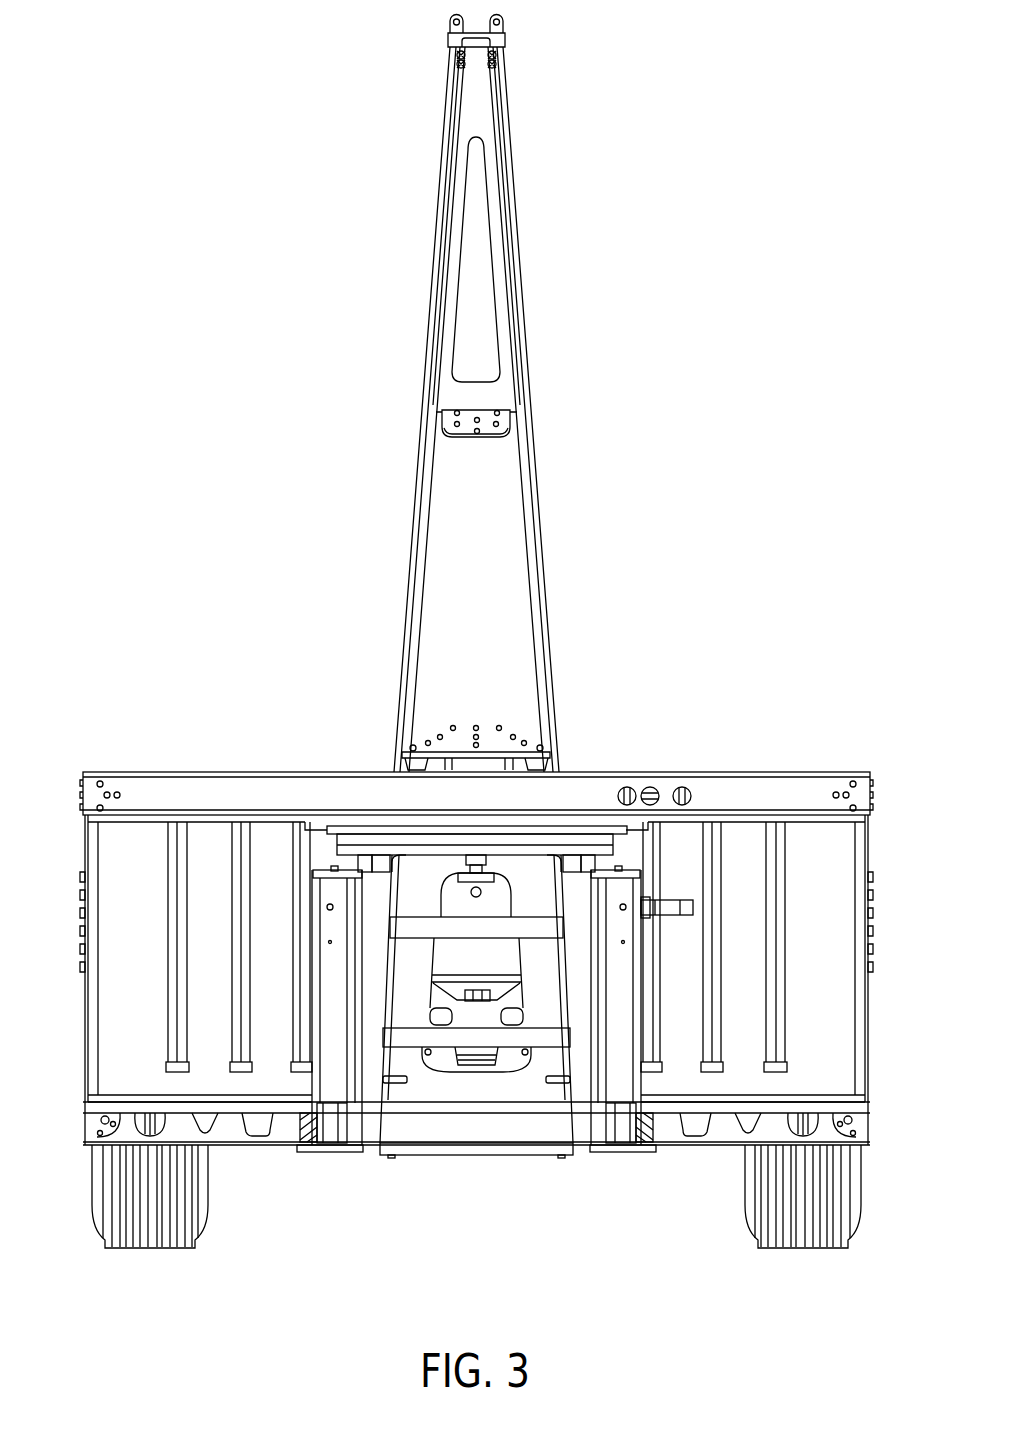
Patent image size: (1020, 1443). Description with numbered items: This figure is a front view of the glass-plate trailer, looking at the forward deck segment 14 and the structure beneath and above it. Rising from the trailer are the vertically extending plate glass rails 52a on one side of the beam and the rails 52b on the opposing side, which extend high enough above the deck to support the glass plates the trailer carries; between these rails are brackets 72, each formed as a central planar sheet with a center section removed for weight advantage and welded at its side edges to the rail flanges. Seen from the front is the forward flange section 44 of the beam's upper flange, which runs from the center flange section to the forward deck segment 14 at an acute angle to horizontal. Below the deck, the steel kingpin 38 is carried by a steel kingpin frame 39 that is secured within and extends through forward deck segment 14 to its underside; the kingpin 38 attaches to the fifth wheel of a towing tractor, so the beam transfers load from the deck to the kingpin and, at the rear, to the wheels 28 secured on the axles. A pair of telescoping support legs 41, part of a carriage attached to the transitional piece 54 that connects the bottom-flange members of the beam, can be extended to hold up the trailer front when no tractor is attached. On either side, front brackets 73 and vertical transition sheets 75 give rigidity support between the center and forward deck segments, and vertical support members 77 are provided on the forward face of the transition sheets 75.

The forward deck segment 14 is at (800, 770).
The wheels 28 is at (210, 1190).
The kingpin 38 is at (484, 868).
The kingpin frame 39 is at (362, 840).
The telescoping support legs 41 is at (328, 968).
The forward flange section 44 is at (482, 580).
The plate glass rails 52a is at (535, 432).
The plate glass rails 52b is at (415, 472).
The transitional piece 54 is at (492, 1132).
The brackets 72 is at (486, 95).
The front brackets 73 is at (85, 945).
The vertical transition sheets 75 is at (112, 848).
The vertical support members 77 is at (775, 1050).